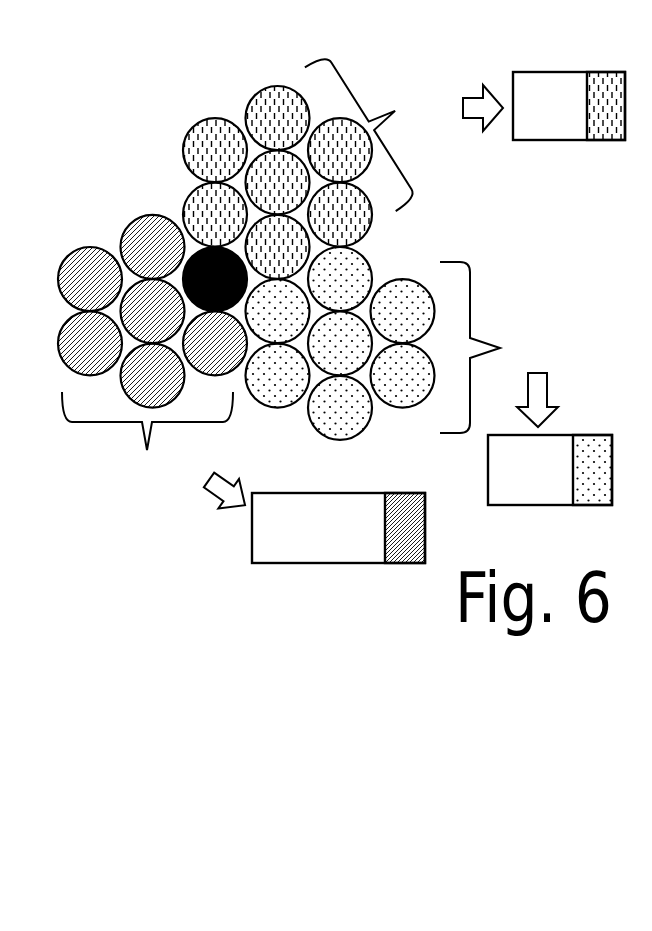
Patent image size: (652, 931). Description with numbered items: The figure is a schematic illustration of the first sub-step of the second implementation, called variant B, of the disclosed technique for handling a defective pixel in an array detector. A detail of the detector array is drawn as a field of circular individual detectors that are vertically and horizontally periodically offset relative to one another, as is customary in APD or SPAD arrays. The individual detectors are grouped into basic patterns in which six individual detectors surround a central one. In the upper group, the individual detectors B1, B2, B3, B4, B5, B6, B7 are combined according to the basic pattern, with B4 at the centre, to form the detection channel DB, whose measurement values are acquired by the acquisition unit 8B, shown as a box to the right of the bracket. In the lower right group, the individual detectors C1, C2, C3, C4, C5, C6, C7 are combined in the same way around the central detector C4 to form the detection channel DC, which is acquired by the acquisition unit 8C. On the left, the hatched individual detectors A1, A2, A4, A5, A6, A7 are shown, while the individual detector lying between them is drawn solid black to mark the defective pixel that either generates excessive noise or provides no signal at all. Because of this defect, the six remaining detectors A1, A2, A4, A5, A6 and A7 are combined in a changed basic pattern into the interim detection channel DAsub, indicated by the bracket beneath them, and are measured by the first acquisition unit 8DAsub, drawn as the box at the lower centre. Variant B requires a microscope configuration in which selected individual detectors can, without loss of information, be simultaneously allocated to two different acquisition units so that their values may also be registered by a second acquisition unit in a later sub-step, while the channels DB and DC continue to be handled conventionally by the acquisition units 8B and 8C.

The individual detector A1 is at (153, 247).
The individual detector A2 is at (90, 279).
The individual detector A4 is at (153, 311).
The individual detector A5 is at (90, 343).
The individual detector A6 is at (215, 343).
The individual detector A7 is at (153, 376).
The individual detector B1 is at (278, 118).
The individual detector B2 is at (215, 150).
The individual detector B3 is at (340, 150).
The individual detector B4 is at (278, 182).
The individual detector B5 is at (215, 215).
The individual detector B6 is at (340, 215).
The individual detector B7 is at (278, 247).
The individual detector C1 is at (340, 279).
The individual detector C2 is at (278, 311).
The individual detector C3 is at (403, 311).
The individual detector C4 is at (340, 343).
The individual detector C5 is at (278, 376).
The individual detector C6 is at (403, 376).
The individual detector C7 is at (340, 408).
The detection channel DB is at (404, 125).
The detection channel DC is at (501, 347).
The interim detection channel DAsub is at (158, 456).
The acquisition unit 8B is at (569, 106).
The acquisition unit 8C is at (550, 470).
The first acquisition unit 8DAsub is at (338, 528).